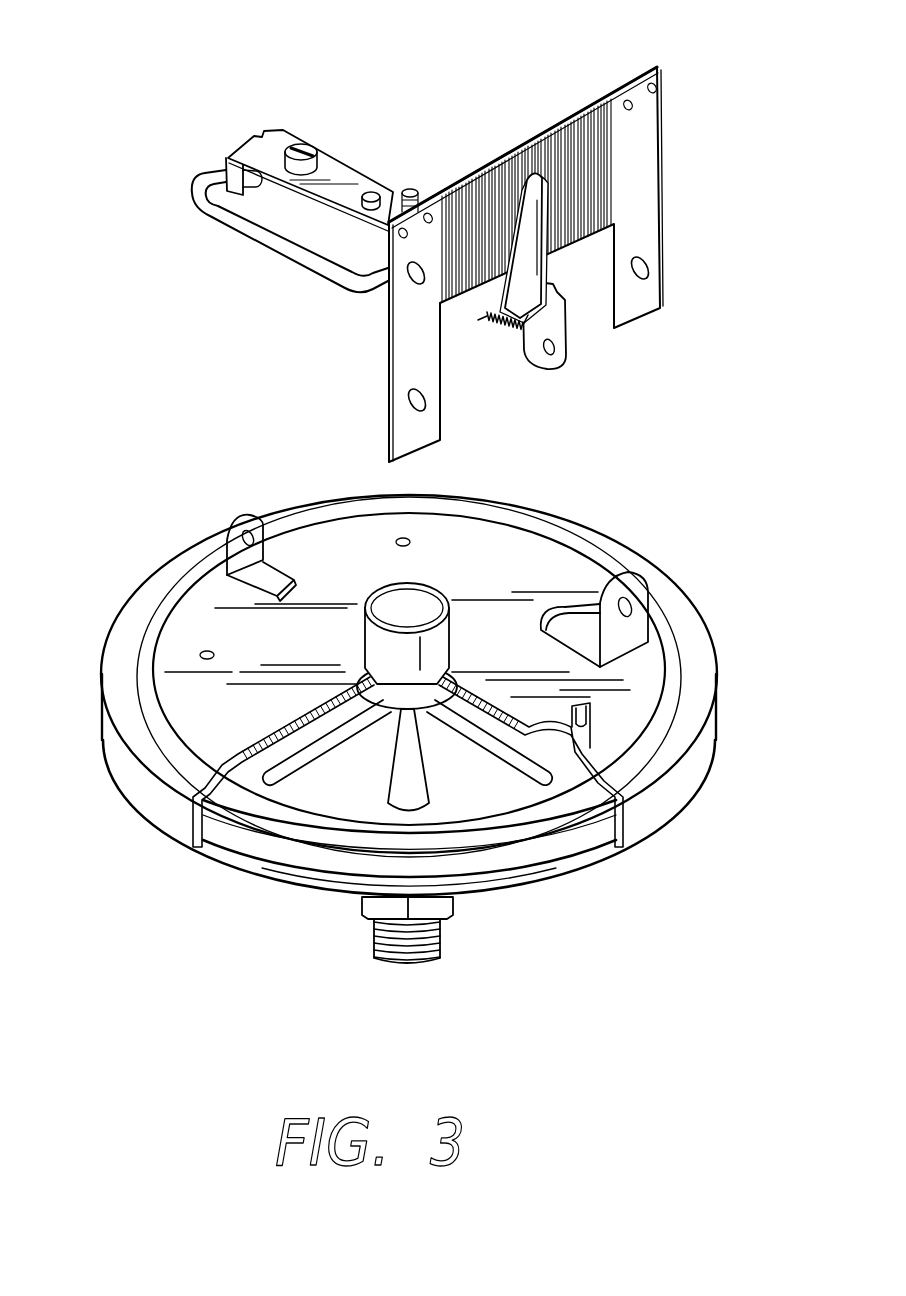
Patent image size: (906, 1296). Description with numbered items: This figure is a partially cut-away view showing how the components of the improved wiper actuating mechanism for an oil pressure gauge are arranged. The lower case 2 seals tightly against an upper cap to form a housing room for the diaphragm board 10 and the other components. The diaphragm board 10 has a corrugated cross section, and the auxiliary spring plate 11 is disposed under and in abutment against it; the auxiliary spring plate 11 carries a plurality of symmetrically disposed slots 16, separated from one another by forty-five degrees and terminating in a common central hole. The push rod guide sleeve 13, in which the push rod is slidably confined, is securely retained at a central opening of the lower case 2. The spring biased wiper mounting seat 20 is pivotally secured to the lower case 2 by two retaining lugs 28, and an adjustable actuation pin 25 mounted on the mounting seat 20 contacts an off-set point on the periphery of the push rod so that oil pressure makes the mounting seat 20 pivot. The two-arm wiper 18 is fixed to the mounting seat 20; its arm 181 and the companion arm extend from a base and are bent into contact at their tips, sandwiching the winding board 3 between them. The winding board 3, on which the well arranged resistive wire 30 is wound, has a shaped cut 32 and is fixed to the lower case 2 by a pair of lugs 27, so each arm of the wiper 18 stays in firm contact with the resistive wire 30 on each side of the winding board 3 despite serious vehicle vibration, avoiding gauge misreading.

The lower case 2 is at (123, 633).
The winding board 3 is at (647, 147).
The diaphragm board 10 is at (557, 843).
The auxiliary spring plate 11 is at (193, 843).
The push rod guide sleeve 13 is at (412, 608).
The slots 16 is at (398, 801).
The two-arm wiper 18 is at (545, 267).
The spring biased wiper mounting seat 20 is at (337, 175).
The adjustable actuation pin 25 is at (387, 217).
The lugs 27 is at (640, 618).
The retaining lugs 28 is at (245, 515).
The resistive wire 30 is at (607, 97).
The shaped cut 32 is at (573, 357).
The arm 181 is at (489, 318).